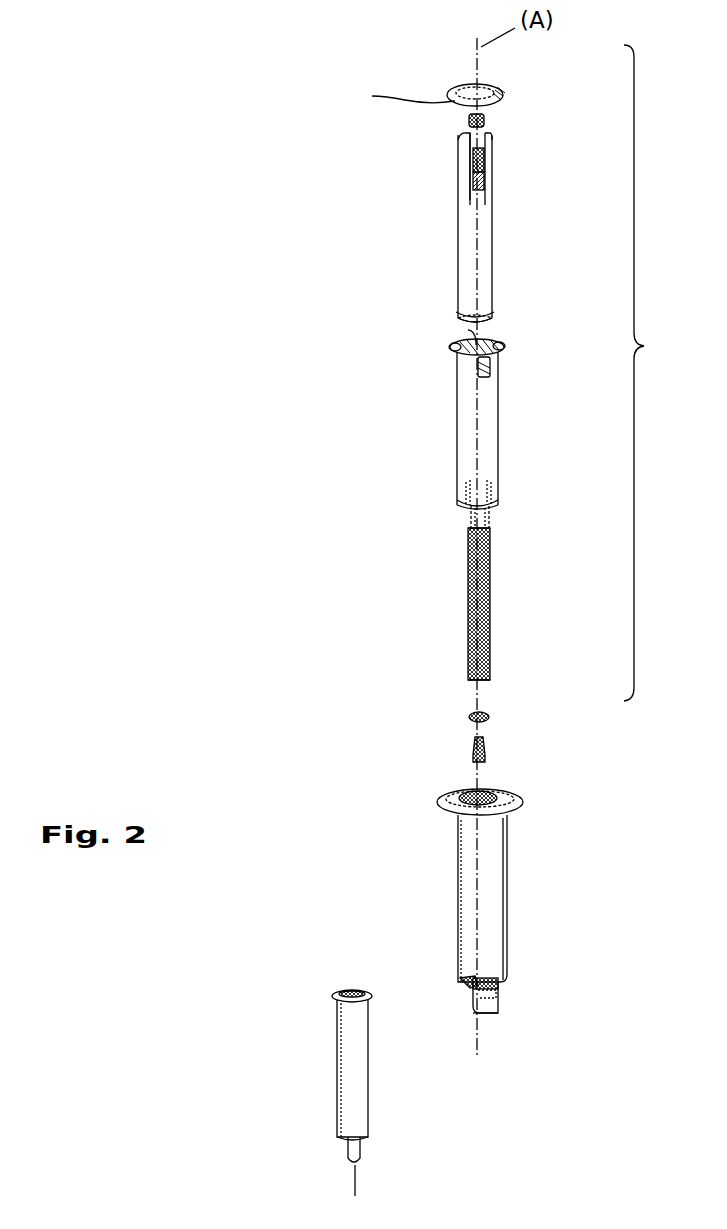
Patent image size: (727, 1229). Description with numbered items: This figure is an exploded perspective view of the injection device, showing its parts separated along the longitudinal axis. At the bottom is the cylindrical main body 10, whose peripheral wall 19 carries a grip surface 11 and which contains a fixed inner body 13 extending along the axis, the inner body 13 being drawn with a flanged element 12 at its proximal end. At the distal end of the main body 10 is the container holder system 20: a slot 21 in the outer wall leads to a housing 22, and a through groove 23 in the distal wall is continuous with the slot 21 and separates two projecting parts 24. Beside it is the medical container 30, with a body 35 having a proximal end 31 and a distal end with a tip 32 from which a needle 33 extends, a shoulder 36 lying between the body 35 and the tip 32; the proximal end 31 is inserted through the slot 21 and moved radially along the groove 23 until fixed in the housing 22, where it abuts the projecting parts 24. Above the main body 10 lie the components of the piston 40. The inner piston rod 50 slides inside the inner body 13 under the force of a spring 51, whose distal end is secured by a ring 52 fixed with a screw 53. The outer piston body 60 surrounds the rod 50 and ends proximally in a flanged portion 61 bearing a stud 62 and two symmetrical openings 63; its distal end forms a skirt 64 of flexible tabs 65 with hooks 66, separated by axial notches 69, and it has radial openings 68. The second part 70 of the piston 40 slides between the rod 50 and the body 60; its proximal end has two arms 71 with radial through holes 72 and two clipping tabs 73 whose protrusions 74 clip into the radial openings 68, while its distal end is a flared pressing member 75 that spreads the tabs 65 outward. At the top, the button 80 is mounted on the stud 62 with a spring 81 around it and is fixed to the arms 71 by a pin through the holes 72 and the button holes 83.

The main body 10 is at (468, 917).
The grip surface 11 is at (508, 894).
The housing flange 12 is at (522, 808).
The inner body 13 is at (470, 798).
The peripheral wall 19 is at (508, 931).
The container holder system 20 is at (477, 999).
The slot 21 is at (500, 982).
The housing 22 is at (470, 982).
The through groove 23 is at (492, 1013).
The projecting parts 24 is at (498, 998).
The medical container 30 is at (340, 1086).
The proximal end 31 is at (336, 995).
The tip 32 is at (361, 1148).
The needle 33 is at (357, 1185).
The body 35 is at (369, 1088).
The shoulder 36 is at (345, 1140).
The piston 40 is at (654, 373).
The inner piston rod 50 is at (467, 645).
The spring 51 is at (491, 588).
The ring 52 is at (490, 716).
The screw 53 is at (486, 758).
The outer piston body 60 is at (468, 430).
The flanged portion 61 is at (505, 345).
The stud 62 is at (468, 330).
The openings 63 is at (455, 352).
The skirt 64 is at (460, 497).
The flexible tabs 65 is at (497, 490).
The hooks 66 is at (496, 504).
The radial openings 68 is at (489, 372).
The axial notches 69 is at (463, 507).
The second part 70 is at (476, 227).
The arms 71 is at (469, 150).
The radial through holes 72 is at (463, 134).
The clipping tabs 73 is at (482, 184).
The protrusion 74 is at (482, 168).
The pressing member 75 is at (500, 309).
The button 80 is at (500, 93).
The spring 81 is at (486, 121).
The radial through holes 83 is at (397, 92).